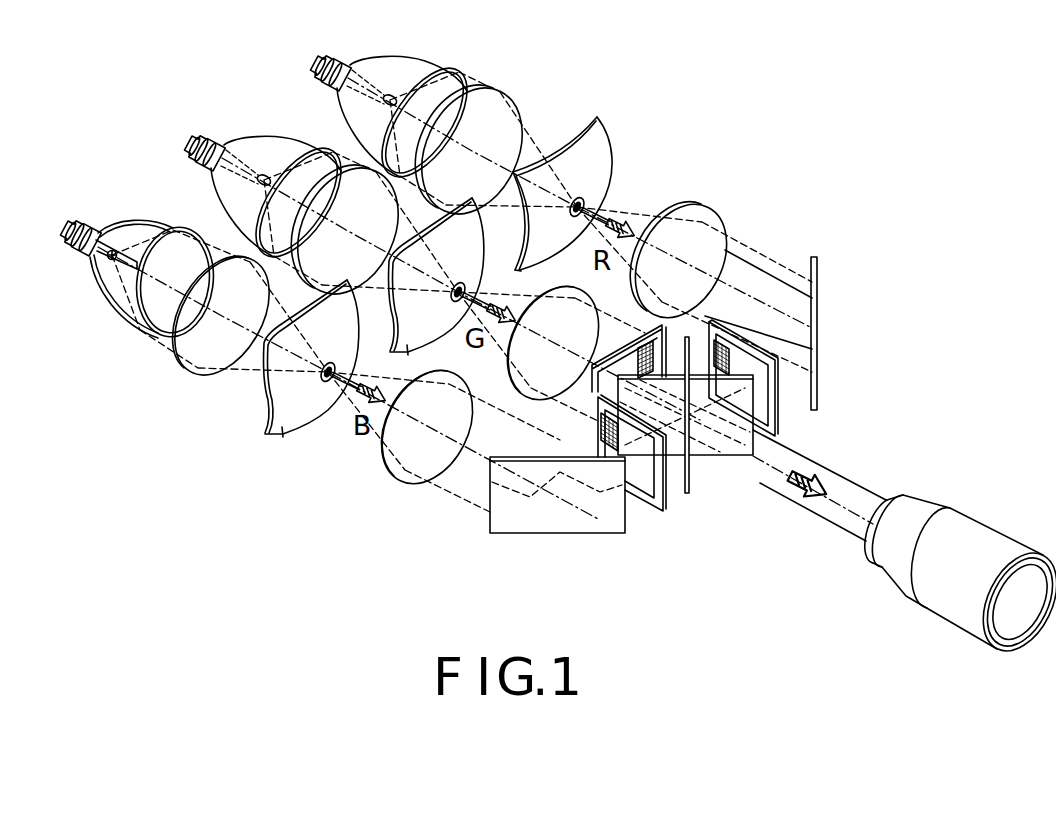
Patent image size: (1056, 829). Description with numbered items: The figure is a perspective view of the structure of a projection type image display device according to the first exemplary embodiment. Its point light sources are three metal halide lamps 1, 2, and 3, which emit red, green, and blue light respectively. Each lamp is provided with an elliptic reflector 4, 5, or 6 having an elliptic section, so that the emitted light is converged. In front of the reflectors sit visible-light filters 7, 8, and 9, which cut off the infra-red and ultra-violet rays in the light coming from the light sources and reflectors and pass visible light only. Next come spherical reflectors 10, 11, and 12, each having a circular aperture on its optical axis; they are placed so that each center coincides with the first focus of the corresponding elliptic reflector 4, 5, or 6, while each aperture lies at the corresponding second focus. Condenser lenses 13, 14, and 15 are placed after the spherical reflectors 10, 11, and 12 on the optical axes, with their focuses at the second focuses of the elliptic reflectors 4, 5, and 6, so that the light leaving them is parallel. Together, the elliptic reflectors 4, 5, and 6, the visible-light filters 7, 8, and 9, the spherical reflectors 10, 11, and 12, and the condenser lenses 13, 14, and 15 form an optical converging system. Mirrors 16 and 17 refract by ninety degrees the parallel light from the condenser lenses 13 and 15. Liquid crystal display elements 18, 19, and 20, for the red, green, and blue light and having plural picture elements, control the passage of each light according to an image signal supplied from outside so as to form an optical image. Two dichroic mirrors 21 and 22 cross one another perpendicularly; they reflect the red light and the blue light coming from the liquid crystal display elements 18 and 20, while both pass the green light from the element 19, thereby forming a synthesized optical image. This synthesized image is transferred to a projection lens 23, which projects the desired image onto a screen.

The metal halide lamp 1 is at (367, 66).
The metal halide lamp 2 is at (232, 148).
The metal halide lamp 3 is at (102, 235).
The elliptic reflector 4 is at (402, 62).
The elliptic reflector 5 is at (268, 152).
The elliptic reflector 6 is at (140, 222).
The visible-light filter 7 is at (480, 90).
The visible-light filter 8 is at (334, 158).
The visible-light filter 9 is at (220, 257).
The spherical reflector 10 is at (557, 165).
The spherical reflector 11 is at (332, 408).
The spherical reflector 12 is at (277, 434).
The condenser lens 13 is at (692, 210).
The condenser lens 14 is at (525, 392).
The condenser lens 15 is at (412, 480).
The mirror 16 is at (820, 330).
The mirror 17 is at (558, 525).
The liquid crystal display element 18 is at (727, 333).
The liquid crystal display element 19 is at (638, 247).
The liquid crystal display element 20 is at (647, 483).
The dichroic mirror 21 is at (687, 497).
The dichroic mirror 22 is at (718, 450).
The projection lens 23 is at (977, 515).